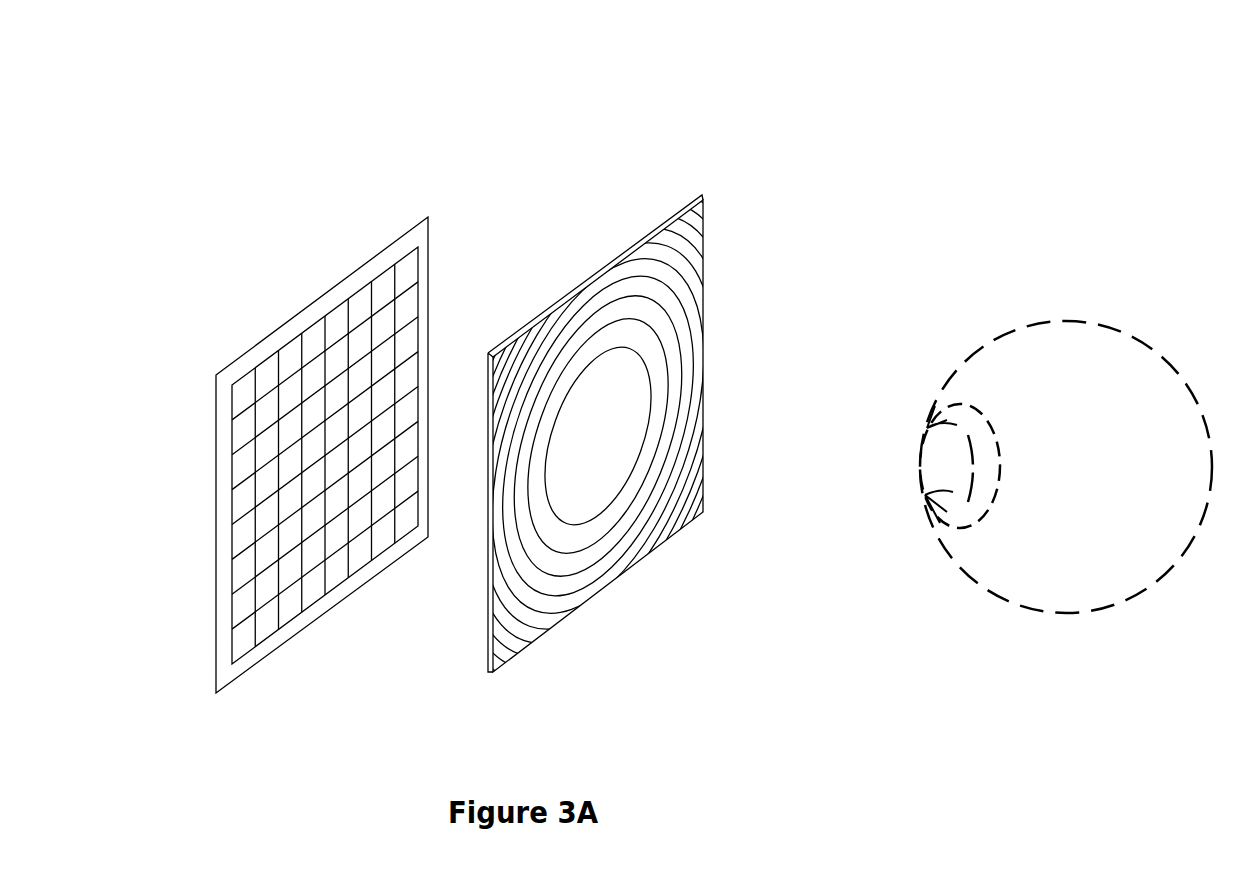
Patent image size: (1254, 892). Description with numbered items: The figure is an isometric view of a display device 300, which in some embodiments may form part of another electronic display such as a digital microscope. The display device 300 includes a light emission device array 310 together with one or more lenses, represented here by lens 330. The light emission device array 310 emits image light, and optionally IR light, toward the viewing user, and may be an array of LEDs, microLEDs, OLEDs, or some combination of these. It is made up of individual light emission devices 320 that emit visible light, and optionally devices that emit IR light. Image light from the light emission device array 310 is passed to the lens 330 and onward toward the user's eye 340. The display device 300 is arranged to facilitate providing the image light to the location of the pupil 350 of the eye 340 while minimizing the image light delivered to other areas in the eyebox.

The display device 300 is at (395, 122).
The light emission device array 310 is at (217, 507).
The light emission devices 320 is at (333, 308).
The lens 330 is at (593, 273).
The eye 340 is at (1067, 323).
The pupil 350 is at (923, 495).